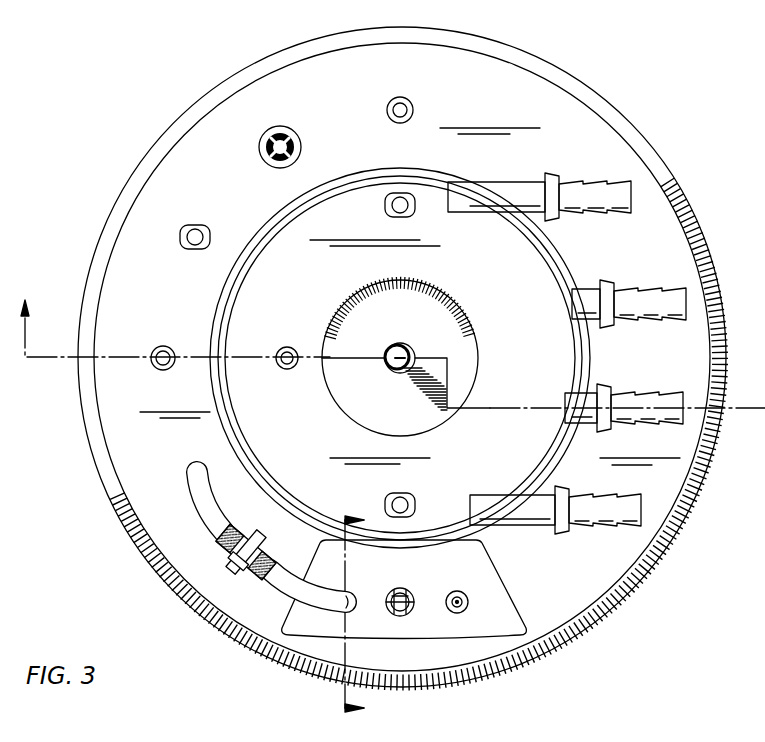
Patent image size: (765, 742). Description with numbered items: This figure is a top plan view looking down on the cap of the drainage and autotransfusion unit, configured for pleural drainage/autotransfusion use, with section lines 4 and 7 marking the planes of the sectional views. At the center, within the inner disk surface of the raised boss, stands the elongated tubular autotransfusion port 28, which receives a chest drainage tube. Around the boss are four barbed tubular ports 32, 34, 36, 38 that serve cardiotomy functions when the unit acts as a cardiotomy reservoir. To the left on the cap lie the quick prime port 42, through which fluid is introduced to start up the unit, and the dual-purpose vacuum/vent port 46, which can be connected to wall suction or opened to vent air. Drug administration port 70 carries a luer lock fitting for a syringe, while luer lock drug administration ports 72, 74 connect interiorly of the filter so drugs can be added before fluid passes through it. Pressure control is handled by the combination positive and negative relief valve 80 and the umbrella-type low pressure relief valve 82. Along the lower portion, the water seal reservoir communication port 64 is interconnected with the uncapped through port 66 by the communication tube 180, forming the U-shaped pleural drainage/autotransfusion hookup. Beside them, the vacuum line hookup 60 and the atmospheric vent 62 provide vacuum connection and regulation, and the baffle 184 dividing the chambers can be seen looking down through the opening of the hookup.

The section line 4- 4 is at (390, 344).
The section line 7- 7 is at (363, 617).
The autotransfusion port 28 is at (397, 344).
The barbed tubular port 32 is at (535, 182).
The barbed tubular port 34 is at (620, 290).
The barbed tubular port 36 is at (624, 392).
The barbed tubular port 38 is at (615, 528).
The quick prime port 42 is at (287, 346).
The vacuum/vent port 46 is at (164, 346).
The vacuum line hookup 60 is at (408, 613).
The atmospheric vent 62 is at (462, 611).
The water seal reservoir communication port 64 is at (358, 600).
The through port 66 is at (196, 468).
The drug administration port 70 is at (196, 224).
The luer lock drug administration port 72 is at (412, 500).
The luer lock drug administration port 74 is at (412, 210).
The combination positive and negative relief valve 80 is at (296, 126).
The low pressure relief valve 82 is at (403, 97).
The communication tube 180 is at (193, 525).
The baffle 184 is at (408, 596).